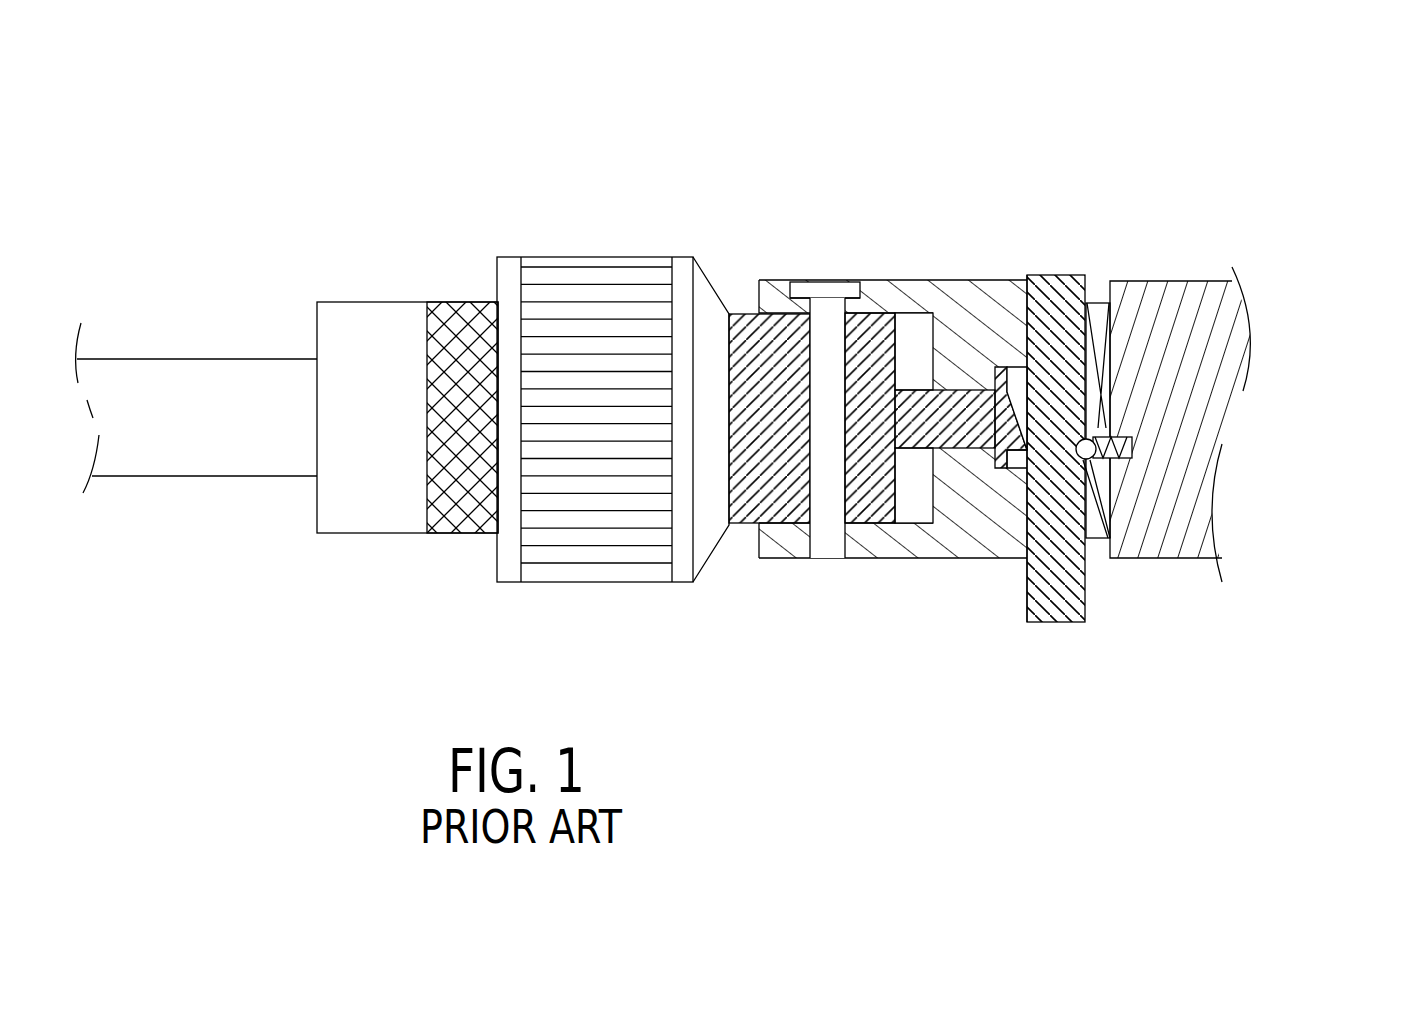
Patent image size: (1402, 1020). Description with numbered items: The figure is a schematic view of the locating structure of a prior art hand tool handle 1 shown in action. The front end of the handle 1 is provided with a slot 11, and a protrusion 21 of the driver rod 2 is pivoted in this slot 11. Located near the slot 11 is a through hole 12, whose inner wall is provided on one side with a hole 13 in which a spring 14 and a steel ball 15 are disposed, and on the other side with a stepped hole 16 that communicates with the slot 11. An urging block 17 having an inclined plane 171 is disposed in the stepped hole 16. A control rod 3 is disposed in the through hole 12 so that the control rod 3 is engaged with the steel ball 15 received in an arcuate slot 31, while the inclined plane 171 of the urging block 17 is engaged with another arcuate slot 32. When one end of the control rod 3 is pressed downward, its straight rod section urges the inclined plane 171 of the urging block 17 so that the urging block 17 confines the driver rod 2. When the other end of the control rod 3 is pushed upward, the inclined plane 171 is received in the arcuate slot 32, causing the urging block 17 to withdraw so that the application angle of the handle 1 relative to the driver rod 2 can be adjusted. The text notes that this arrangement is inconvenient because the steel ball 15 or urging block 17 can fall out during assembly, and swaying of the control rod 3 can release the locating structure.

The handle 1 is at (1168, 317).
The driver rod 2 is at (235, 408).
The control rod 3 is at (1055, 275).
The slot 11 is at (925, 340).
The through hole 12 is at (1025, 540).
The hole 13 is at (1130, 442).
The spring 14 is at (1112, 460).
The steel ball 15 is at (1112, 555).
The stepped hole 16 is at (1018, 380).
The urging block 17 is at (935, 417).
The protrusion 21 is at (763, 445).
The arcuate slot 31 is at (1085, 457).
The arcuate slot 32 is at (1085, 460).
The inclined plane 171 is at (1015, 430).